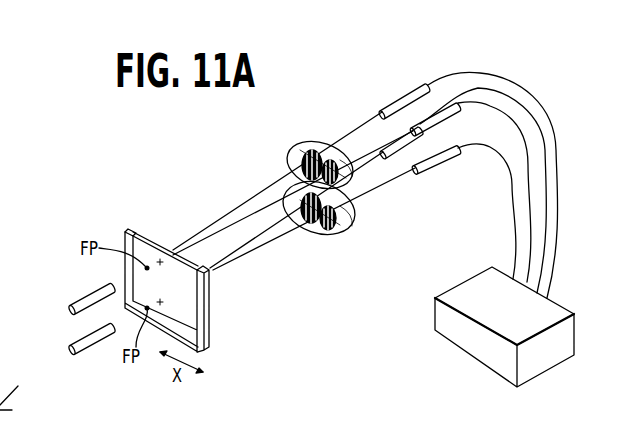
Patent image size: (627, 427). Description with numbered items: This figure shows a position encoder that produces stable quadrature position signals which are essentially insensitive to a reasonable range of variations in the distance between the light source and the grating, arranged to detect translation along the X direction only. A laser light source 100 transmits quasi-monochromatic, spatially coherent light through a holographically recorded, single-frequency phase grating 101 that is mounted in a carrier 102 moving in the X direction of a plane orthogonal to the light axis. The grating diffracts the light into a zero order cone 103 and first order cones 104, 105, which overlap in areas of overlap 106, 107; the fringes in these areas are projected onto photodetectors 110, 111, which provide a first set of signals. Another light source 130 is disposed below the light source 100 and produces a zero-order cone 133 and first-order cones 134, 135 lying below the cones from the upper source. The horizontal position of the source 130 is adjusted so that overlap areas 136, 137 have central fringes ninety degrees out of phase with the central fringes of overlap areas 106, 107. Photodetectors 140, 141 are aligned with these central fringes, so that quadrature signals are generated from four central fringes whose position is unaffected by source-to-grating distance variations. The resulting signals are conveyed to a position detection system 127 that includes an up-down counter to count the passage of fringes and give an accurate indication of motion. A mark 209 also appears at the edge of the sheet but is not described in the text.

The laser light source 100 is at (82, 300).
The phase grating 101 is at (148, 252).
The carrier 102 is at (210, 332).
The zero order cone 103 is at (325, 152).
The first order cone 104 is at (292, 147).
The first order cone 105 is at (348, 170).
The area of overlap 106 is at (318, 152).
The area of overlap 107 is at (330, 167).
The photodetector 110 is at (406, 97).
The photodetector 111 is at (455, 113).
The position detection system 127 is at (455, 335).
The light source 130 is at (92, 347).
The zero-order cone 133 is at (315, 230).
The first-order cone 134 is at (290, 187).
The first-order cone 135 is at (352, 236).
The overlap area 136 is at (308, 217).
The overlap area 137 is at (332, 220).
The photodetector 140 is at (397, 155).
The photodetector 141 is at (437, 173).
The reference mark 209 is at (14, 383).